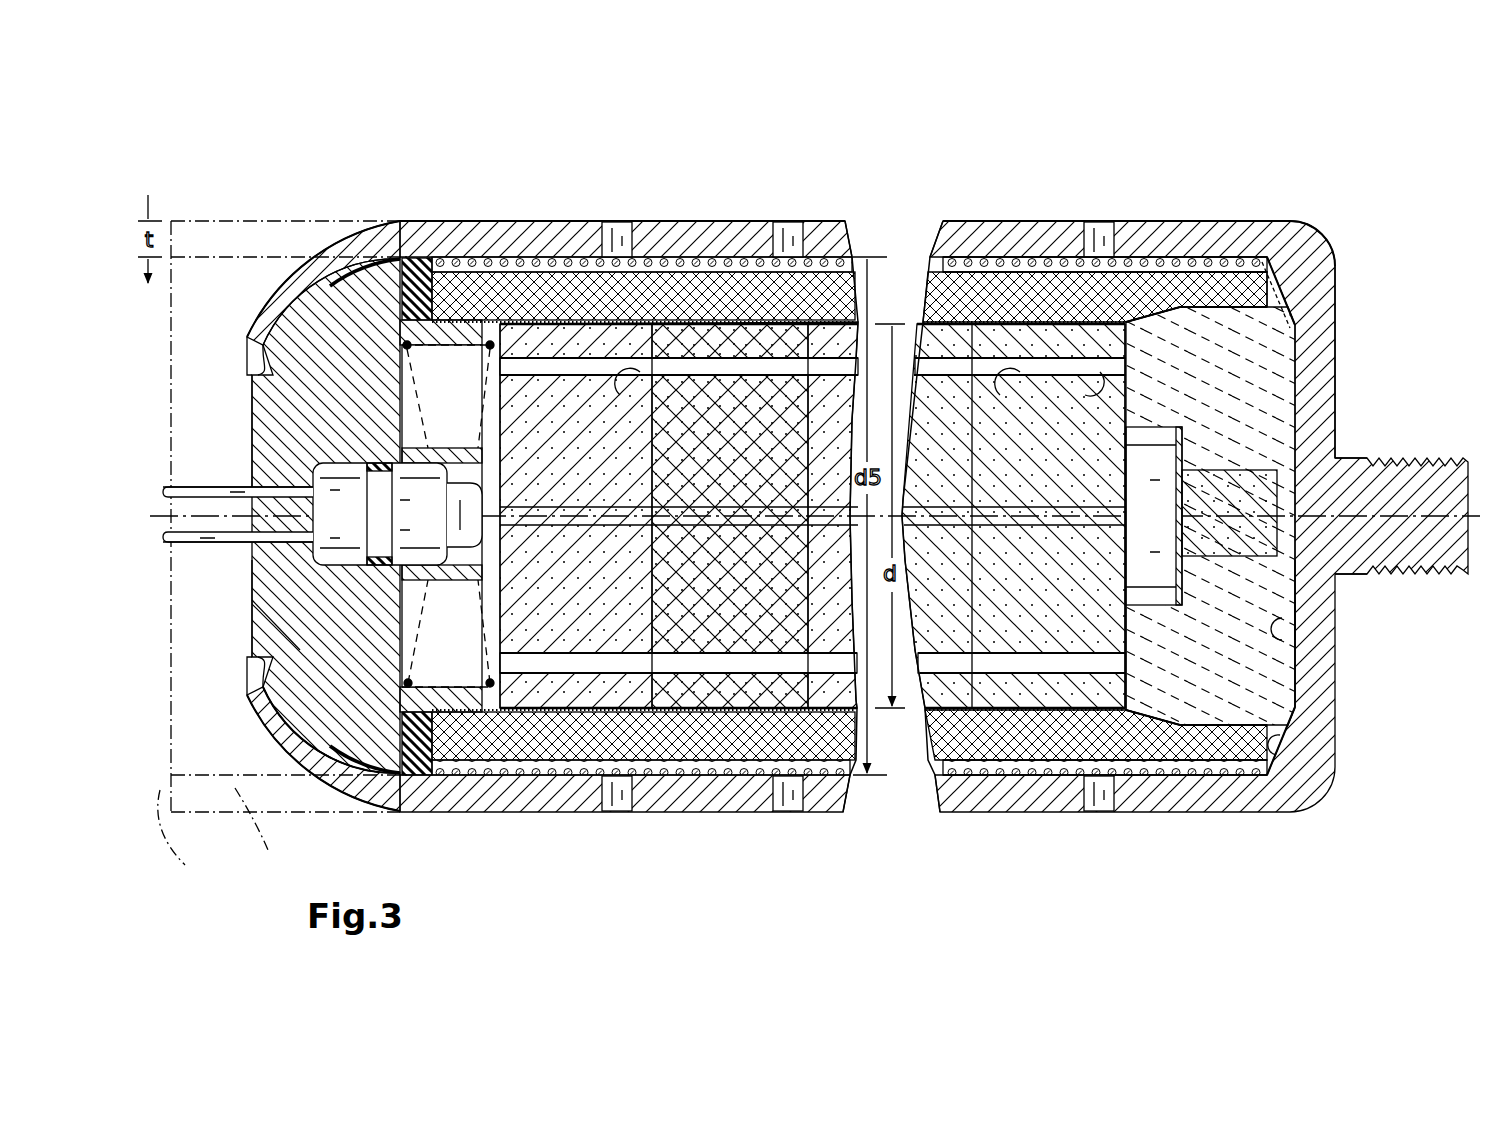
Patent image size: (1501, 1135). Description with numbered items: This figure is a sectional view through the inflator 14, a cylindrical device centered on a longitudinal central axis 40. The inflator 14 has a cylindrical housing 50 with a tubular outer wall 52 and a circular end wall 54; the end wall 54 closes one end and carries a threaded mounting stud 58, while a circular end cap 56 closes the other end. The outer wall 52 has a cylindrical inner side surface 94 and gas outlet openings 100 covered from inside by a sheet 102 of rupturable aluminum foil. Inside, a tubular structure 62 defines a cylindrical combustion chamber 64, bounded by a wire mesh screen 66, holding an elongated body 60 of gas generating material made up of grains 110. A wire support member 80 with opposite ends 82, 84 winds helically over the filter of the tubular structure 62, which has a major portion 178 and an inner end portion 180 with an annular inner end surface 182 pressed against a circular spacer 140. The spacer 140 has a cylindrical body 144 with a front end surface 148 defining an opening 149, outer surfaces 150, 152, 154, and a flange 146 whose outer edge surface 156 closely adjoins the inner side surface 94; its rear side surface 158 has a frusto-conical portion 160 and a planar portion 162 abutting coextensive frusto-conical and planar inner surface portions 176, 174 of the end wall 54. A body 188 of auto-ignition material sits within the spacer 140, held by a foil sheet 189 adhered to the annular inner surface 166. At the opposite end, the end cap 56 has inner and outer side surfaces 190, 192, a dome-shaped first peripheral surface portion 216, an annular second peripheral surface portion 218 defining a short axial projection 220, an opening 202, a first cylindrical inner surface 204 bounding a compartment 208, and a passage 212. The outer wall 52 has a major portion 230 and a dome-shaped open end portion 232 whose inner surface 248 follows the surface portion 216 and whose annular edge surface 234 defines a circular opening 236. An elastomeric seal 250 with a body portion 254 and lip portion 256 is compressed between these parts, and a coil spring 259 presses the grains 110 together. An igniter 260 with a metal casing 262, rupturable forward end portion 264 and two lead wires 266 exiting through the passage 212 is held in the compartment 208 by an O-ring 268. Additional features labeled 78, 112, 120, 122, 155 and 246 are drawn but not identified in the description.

The inflator 14 is at (221, 163).
The longitudinal central axis 40 is at (155, 513).
The cylindrical housing 50 is at (540, 219).
The tubular outer wall 52 is at (572, 245).
The circular end wall 54 is at (1312, 385).
The circular end cap 56 is at (257, 432).
The threaded mounting stud 58 is at (1415, 490).
The body of gas generating material 60 is at (683, 343).
The tubular structure 62 is at (720, 278).
The combustion chamber 64 is at (734, 454).
The wire mesh screen 66 is at (1042, 290).
The housing fitting 78 is at (1012, 232).
The support member 80 is at (1000, 255).
The end of support member 82 is at (445, 285).
The end of support member 84 is at (1258, 233).
The cylindrical inner side surface 94 is at (1196, 762).
The gas outlet openings 100 is at (623, 218).
The sheet of rupturable pressure controlling material 102 is at (969, 232).
The grain of gas generating material 110 is at (530, 692).
The lower bead layer 112 is at (592, 710).
The core segment 120 is at (608, 385).
The flow channel 122 is at (490, 363).
The circular spacer 140 is at (1302, 312).
The cylindrical body of spacer 144 is at (1222, 345).
The circular flange 146 is at (1268, 288).
The annular front end surface 148 is at (1127, 620).
The circular opening 149 is at (1132, 583).
The first outer surface 150 is at (1120, 315).
The second outer surface 152 is at (1135, 250).
The third outer surface 154 is at (1205, 300).
The layer interface 155 is at (1147, 285).
The annular outer edge surface 156 is at (1275, 762).
The rear side surface 158 is at (1297, 600).
The frusto-conical portion 160 is at (1297, 718).
The planar circular portion 162 is at (1297, 612).
The annular inner surface 166 is at (1154, 516).
The planar inner surface portion 174 is at (1300, 630).
The frusto-conical inner surface portion 176 is at (1290, 748).
The major portion of tubular structure 178 is at (826, 258).
The inner end portion 180 is at (1180, 305).
The annular inner end surface 182 is at (1310, 230).
The body of auto-ignition material 188 is at (1222, 500).
The sheet of metal foil 189 is at (1165, 430).
The inner side surface of end cap 190 is at (412, 752).
The outer side surface of end cap 192 is at (251, 607).
The circular opening 202 is at (500, 468).
The first cylindrical inner surface 204 is at (442, 578).
The cylindrical compartment 208 is at (352, 514).
The axially extending passage 212 is at (255, 522).
The first peripheral surface portion 216 is at (320, 258).
The second peripheral surface portion 218 is at (272, 352).
The short axial projection 220 is at (254, 636).
The major portion of outer wall 230 is at (592, 248).
The open end portion of outer wall 232 is at (287, 300).
The annular edge surface 234 is at (262, 330).
The circular opening 236 is at (242, 412).
The lower shell nose 246 is at (278, 748).
The inner surface of open end portion 248 is at (335, 722).
The annular elastomeric seal 250 is at (418, 252).
The body portion of seal 254 is at (470, 258).
The lip portion of seal 256 is at (385, 282).
The coil spring 259 is at (482, 252).
The igniter 260 is at (484, 536).
The cylindrical metal casing 262 is at (330, 472).
The rupturable forward end portion 264 is at (462, 515).
The lead wires 266 is at (193, 535).
The elastomeric O-ring 268 is at (362, 542).